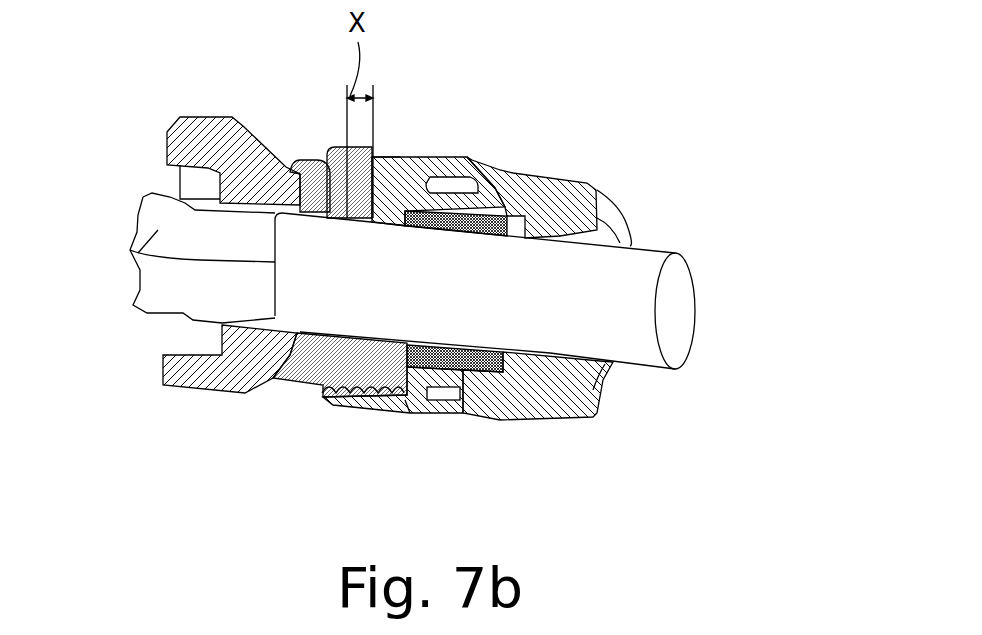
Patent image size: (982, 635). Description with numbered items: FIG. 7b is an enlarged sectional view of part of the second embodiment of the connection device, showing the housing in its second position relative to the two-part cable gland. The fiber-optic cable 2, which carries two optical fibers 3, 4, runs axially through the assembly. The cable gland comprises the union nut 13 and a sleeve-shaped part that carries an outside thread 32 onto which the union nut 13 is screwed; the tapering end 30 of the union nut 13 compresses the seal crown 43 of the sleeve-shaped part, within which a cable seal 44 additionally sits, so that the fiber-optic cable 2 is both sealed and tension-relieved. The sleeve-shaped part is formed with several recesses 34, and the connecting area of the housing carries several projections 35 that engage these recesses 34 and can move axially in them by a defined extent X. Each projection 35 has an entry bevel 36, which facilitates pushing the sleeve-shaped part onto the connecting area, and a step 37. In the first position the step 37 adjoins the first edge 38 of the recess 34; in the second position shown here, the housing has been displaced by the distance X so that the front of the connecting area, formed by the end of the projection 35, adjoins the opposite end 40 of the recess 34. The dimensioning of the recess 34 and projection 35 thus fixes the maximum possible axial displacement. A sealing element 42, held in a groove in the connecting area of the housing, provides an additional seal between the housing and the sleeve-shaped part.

The fiber-optic cable 2 is at (620, 318).
The optical fiber 3 is at (165, 295).
The optical fiber 4 is at (145, 242).
The union nut 13 is at (577, 195).
The tapering end 30 is at (530, 413).
The outside thread 32 is at (300, 168).
The recess 34 is at (335, 400).
The projection 35 is at (355, 407).
The entry bevel 36 is at (410, 152).
The step 37 is at (388, 152).
The first edge 38 is at (335, 150).
The opposite end 40 is at (483, 170).
The sealing element 42 is at (320, 388).
The seal crown 43 is at (486, 412).
The cable seal 44 is at (508, 176).